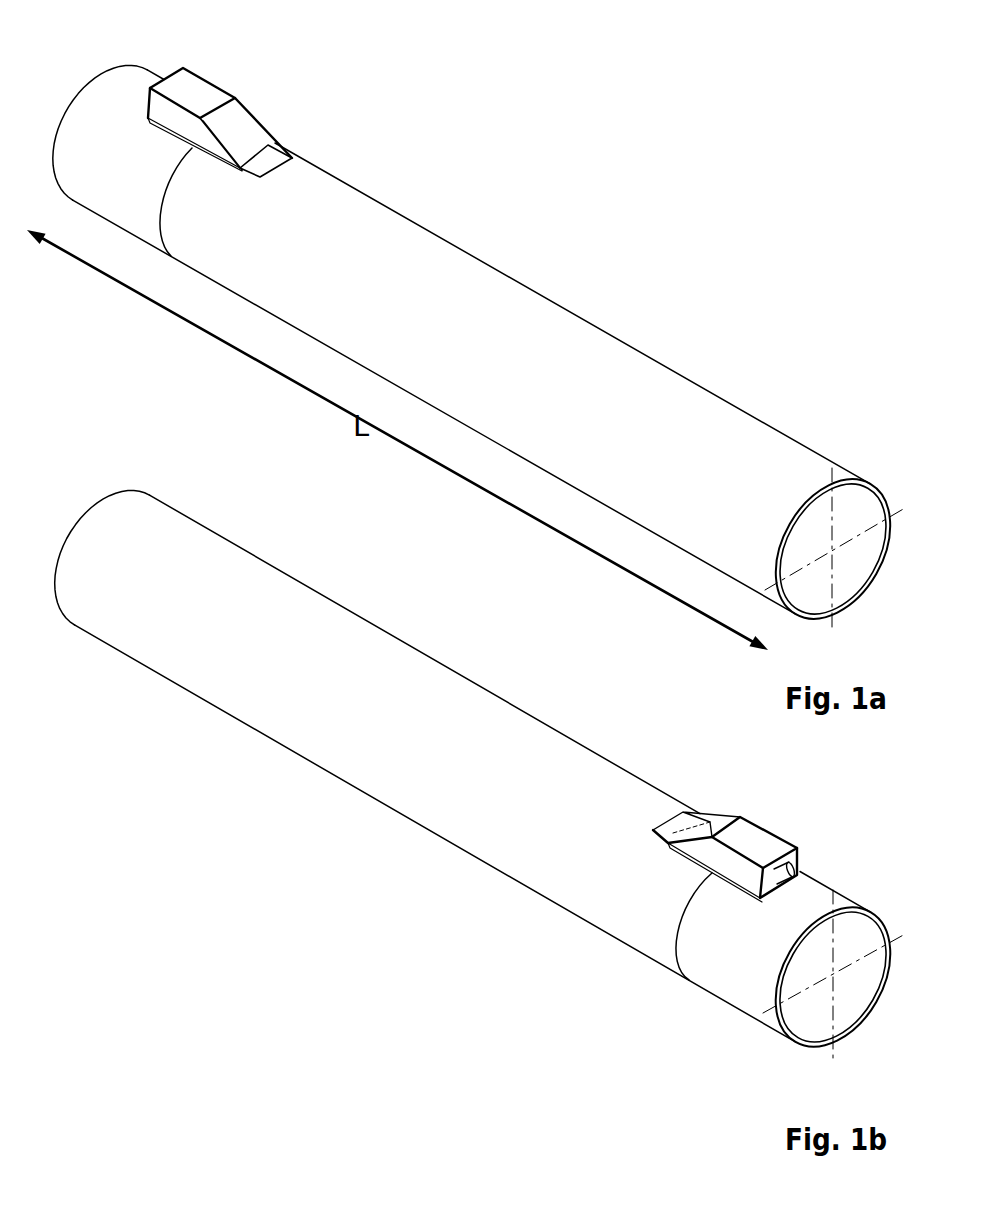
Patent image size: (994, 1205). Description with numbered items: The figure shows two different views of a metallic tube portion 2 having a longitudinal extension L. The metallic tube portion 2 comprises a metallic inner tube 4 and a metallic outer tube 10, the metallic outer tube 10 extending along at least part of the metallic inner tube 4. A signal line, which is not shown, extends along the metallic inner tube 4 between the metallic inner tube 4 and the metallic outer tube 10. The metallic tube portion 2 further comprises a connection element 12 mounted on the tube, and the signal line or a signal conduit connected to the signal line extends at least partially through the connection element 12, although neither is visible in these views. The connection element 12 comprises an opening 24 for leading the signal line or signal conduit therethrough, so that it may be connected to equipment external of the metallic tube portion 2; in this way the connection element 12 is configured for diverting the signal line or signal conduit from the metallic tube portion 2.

In FIG. 1a, the metallic tube portion 2 is at (588, 186).
In FIG. 1b, the metallic tube portion 2 is at (545, 686).
In FIG. 1a, the metallic inner tube 4 is at (110, 137).
In FIG. 1b, the metallic inner tube 4 is at (735, 980).
In FIG. 1a, the metallic outer tube 10 is at (587, 365).
In FIG. 1b, the metallic outer tube 10 is at (395, 780).
In FIG. 1a, the connection element 12 is at (187, 88).
In FIG. 1b, the connection element 12 is at (753, 840).
In FIG. 1b, the opening 24 is at (805, 874).